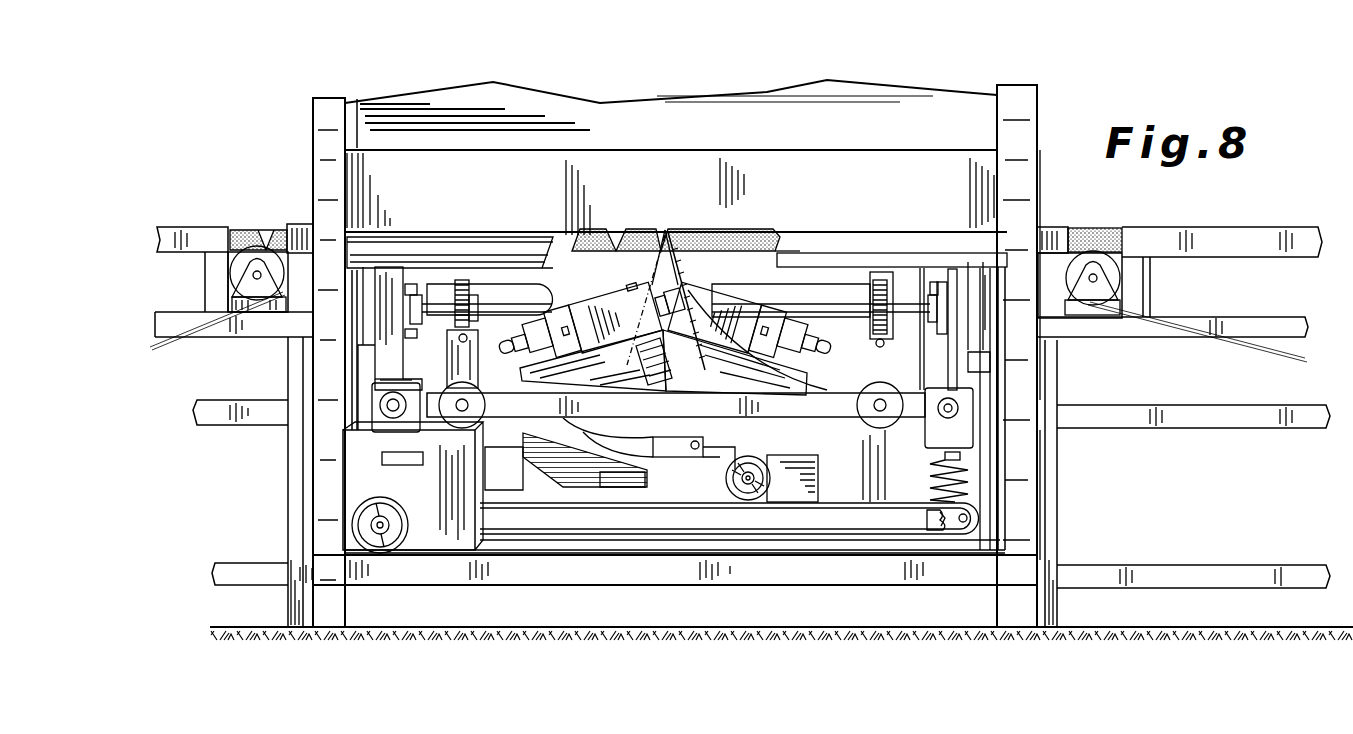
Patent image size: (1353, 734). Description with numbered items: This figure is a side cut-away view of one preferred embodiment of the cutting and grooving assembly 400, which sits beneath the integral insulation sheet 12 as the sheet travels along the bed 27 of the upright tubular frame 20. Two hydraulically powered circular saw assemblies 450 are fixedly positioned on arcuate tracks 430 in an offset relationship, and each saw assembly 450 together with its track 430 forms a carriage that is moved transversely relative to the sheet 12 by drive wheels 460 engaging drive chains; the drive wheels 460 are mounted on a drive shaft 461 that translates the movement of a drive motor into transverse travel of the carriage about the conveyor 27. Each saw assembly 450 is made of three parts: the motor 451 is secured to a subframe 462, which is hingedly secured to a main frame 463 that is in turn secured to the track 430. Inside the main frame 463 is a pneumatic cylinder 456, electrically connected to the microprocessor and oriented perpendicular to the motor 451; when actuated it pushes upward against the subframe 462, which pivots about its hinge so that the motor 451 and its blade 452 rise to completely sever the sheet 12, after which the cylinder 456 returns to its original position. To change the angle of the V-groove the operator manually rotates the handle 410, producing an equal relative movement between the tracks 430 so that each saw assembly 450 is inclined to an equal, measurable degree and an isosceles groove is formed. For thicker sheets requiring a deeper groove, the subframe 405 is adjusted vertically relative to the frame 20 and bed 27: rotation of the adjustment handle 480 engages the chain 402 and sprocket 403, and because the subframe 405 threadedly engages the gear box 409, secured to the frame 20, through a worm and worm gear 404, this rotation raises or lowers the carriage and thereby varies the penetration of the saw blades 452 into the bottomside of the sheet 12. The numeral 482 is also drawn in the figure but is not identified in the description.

The cutting and grooving assembly 400 is at (968, 85).
The circular saw assembly 450 is at (607, 283).
The saw blade 452 is at (677, 230).
The integral insulation sheet 12 is at (703, 230).
The motor 451 is at (550, 226).
The subframe 462 is at (535, 335).
The drive shaft 461 is at (807, 310).
The drive wheel 460 is at (880, 300).
The bed 27 is at (1050, 243).
The frame 20 is at (1280, 325).
The worm and worm gear 404 is at (973, 487).
The sprocket 403 is at (985, 518).
The chain 402 is at (910, 534).
The gear box 409 is at (946, 532).
The subframe 405 is at (840, 420).
The handle 410 is at (748, 502).
The arcuate track 430 is at (697, 430).
The pneumatic cylinder 456 is at (647, 332).
The main frame 463 is at (557, 243).
The adjustment handle 480 is at (395, 552).
The gear box 482 is at (447, 538).